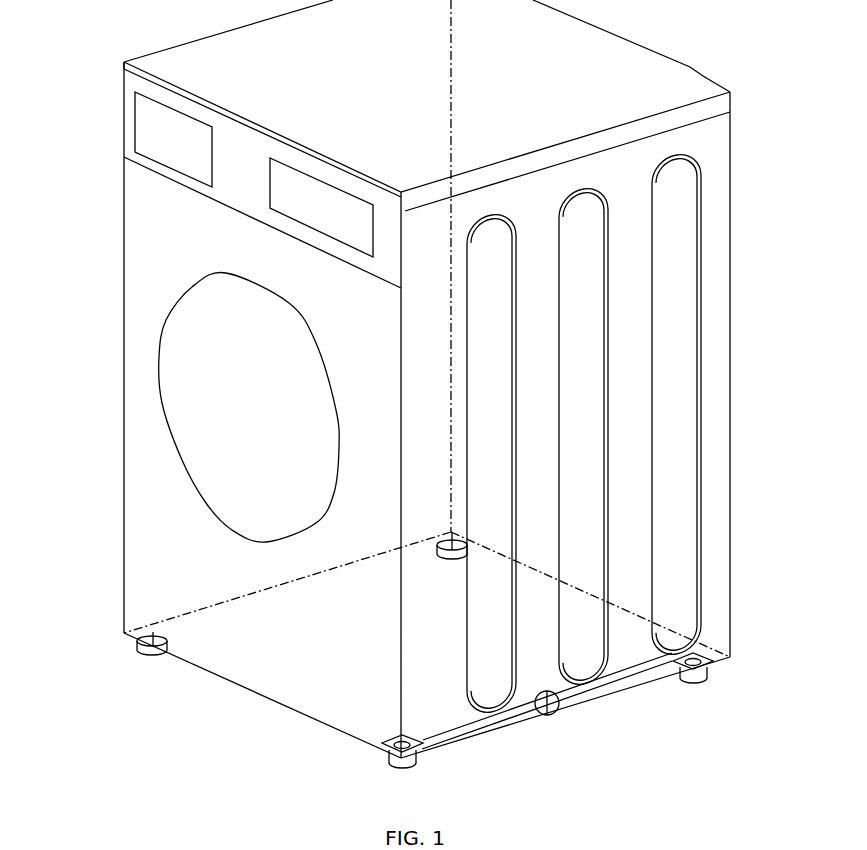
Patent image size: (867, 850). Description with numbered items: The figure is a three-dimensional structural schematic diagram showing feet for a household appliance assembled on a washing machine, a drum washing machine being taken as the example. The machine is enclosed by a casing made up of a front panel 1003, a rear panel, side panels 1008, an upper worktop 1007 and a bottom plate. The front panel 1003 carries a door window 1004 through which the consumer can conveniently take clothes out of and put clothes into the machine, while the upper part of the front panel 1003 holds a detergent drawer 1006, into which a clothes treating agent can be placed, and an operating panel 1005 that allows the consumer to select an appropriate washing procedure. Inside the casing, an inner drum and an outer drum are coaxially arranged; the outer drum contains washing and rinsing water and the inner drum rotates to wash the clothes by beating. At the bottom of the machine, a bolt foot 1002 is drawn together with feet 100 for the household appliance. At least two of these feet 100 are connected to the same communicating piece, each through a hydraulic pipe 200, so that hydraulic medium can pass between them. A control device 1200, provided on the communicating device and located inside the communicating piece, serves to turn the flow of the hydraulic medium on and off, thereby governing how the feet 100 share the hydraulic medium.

The front panel 1003 is at (150, 500).
The upper worktop 1007 is at (590, 70).
The detergent drawer 1006 is at (153, 133).
The operating panel 1005 is at (300, 198).
The door window 1004 is at (190, 396).
The side panel 1008 is at (673, 360).
The bolt foot 1002 is at (140, 652).
The foot for household appliance 100 is at (420, 763).
The hydraulic pipe 200 is at (582, 693).
The control device 1200 is at (548, 715).